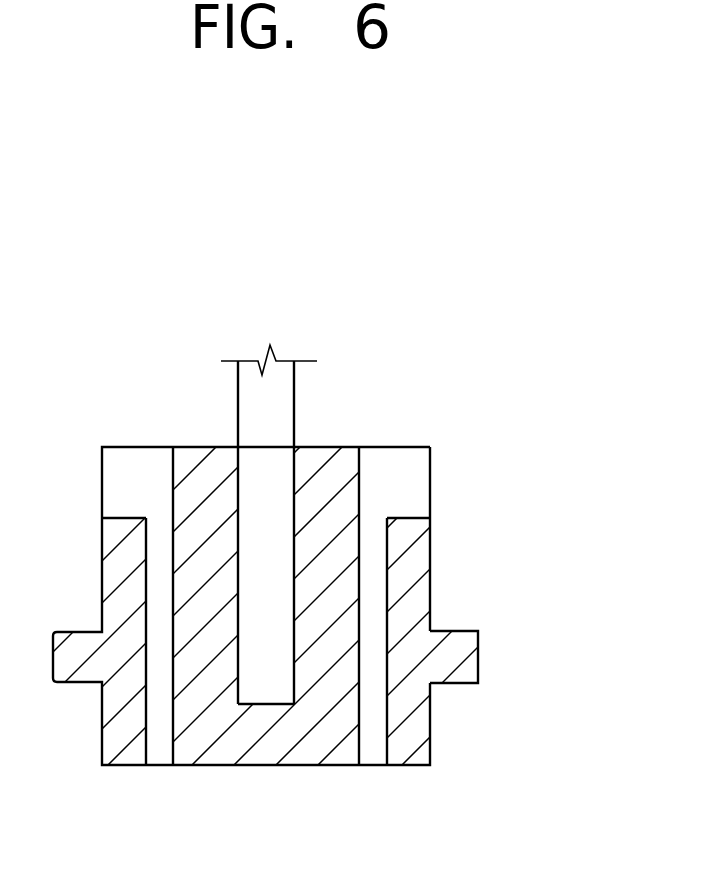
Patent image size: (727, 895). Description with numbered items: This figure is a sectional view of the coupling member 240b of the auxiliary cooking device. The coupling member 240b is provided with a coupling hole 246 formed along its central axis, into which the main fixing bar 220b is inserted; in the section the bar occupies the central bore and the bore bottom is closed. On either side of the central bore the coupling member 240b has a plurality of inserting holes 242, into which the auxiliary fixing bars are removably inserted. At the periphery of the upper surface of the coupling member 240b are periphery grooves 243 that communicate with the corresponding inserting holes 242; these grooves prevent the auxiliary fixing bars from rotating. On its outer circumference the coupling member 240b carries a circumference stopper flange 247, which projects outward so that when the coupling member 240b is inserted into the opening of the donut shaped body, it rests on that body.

The main fixing bar 220b is at (280, 422).
The coupling hole 246 is at (295, 503).
The periphery grooves 243 is at (410, 482).
The coupling member 240b is at (438, 560).
The circumference stopper flange 247 is at (460, 657).
The inserting holes 242 is at (160, 757).